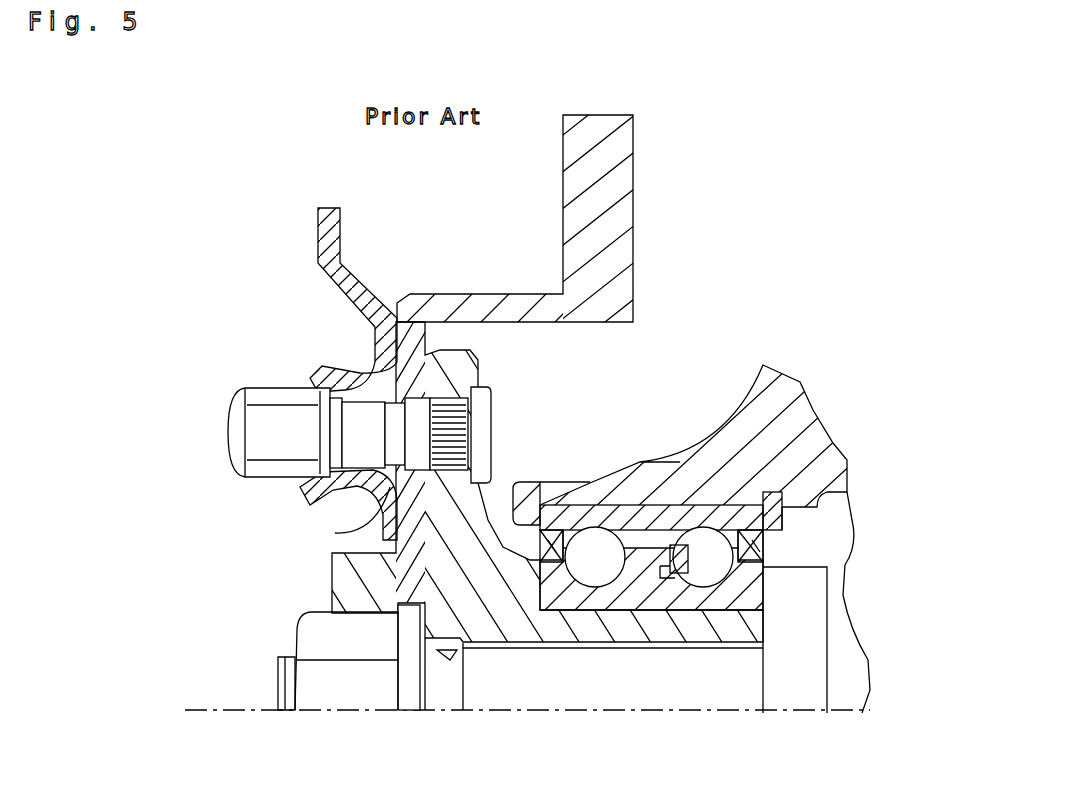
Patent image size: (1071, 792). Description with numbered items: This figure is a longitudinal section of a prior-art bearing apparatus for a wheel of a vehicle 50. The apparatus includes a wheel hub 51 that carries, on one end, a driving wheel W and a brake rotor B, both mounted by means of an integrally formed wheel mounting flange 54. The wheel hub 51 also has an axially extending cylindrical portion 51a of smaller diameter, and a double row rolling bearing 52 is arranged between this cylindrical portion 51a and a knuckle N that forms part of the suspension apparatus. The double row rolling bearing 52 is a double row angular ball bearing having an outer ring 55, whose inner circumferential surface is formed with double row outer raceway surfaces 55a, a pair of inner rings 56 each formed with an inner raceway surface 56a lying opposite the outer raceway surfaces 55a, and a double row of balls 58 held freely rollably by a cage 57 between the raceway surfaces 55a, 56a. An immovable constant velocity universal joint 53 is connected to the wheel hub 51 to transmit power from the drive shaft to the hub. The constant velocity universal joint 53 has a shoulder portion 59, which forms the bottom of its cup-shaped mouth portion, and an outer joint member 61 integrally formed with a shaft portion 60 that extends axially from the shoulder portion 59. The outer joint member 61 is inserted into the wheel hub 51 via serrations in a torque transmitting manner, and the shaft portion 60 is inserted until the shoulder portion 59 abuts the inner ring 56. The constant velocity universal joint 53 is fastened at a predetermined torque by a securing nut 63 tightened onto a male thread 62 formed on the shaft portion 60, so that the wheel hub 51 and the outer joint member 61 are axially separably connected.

The driving wheel W is at (367, 318).
The brake rotor B is at (485, 300).
The knuckle N is at (797, 385).
The bearing apparatus for a wheel of a vehicle 50 is at (657, 353).
The wheel hub 51 is at (440, 550).
The cylindrical portion 51a is at (628, 588).
The double row rolling bearing 52 is at (657, 505).
The constant velocity universal joint 53 is at (827, 515).
The wheel mounting flange 54 is at (440, 383).
The outer ring 55 is at (633, 517).
The outer raceway surfaces 55a is at (553, 530).
The inner rings 56 is at (745, 598).
The inner raceway surface 56a is at (775, 550).
The cage 57 is at (700, 600).
The balls 58 is at (607, 547).
The shoulder portion 59 is at (790, 550).
The shaft portion 60 is at (740, 660).
The outer joint member 61 is at (797, 643).
The male thread 62 is at (455, 648).
The securing nut 63 is at (320, 627).